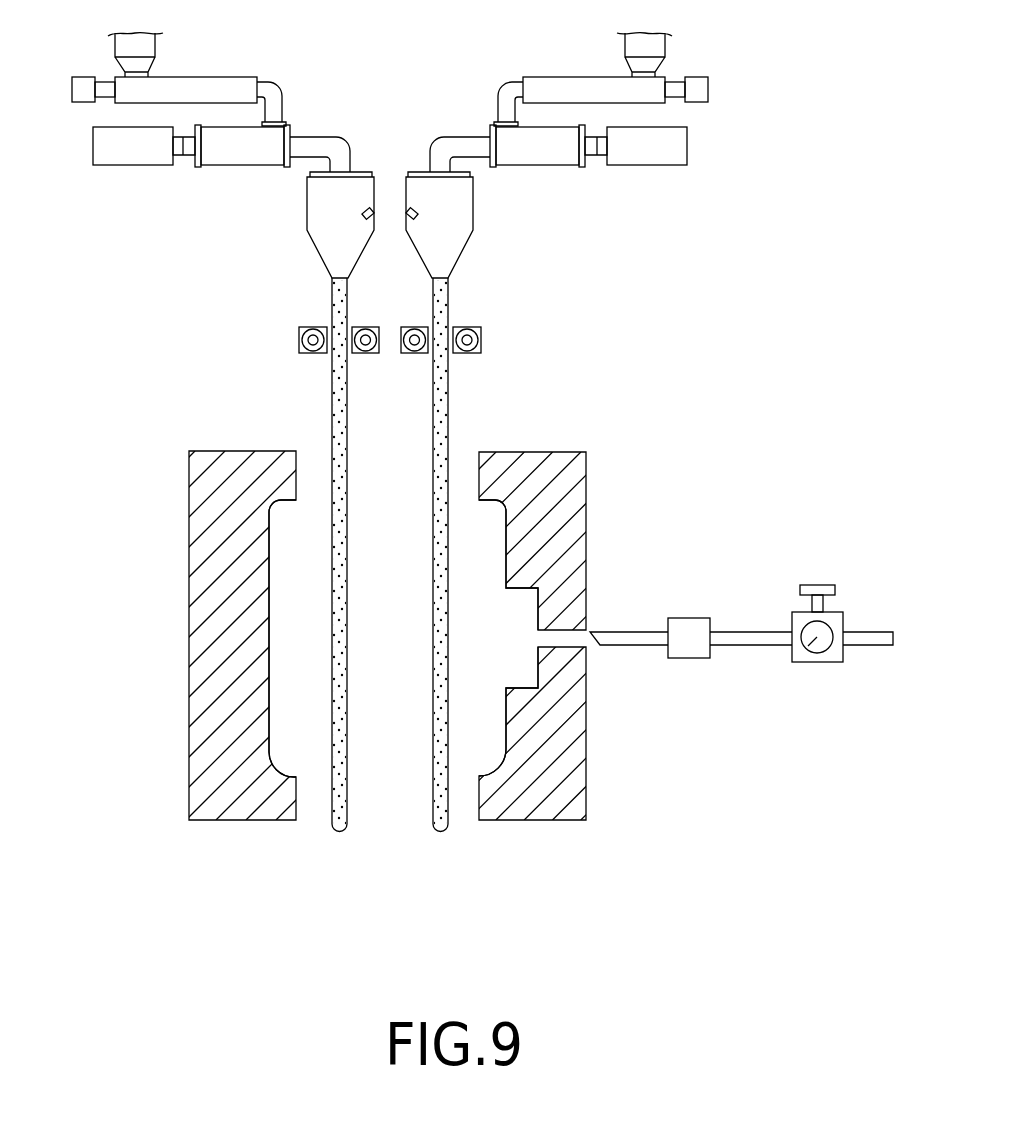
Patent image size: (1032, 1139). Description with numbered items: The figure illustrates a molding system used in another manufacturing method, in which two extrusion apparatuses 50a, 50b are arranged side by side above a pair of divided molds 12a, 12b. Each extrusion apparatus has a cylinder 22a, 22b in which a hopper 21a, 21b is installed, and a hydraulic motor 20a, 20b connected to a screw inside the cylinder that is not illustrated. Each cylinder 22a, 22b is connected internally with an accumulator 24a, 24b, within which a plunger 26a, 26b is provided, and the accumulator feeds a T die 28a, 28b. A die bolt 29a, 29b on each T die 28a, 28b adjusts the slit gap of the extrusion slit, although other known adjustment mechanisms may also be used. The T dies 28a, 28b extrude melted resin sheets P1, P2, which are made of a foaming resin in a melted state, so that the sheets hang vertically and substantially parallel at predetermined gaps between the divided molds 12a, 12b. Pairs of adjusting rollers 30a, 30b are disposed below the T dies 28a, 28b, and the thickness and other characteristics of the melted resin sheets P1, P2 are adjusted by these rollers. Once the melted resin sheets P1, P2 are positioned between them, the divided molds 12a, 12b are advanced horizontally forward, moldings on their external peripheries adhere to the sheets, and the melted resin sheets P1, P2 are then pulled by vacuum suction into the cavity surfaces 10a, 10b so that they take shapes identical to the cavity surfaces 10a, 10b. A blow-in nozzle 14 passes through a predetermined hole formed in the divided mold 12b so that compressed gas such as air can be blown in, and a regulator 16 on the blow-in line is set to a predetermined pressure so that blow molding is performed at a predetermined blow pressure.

The cavity surface 10a is at (296, 500).
The cavity surface 10b is at (483, 500).
The divided mold 12a is at (203, 578).
The divided mold 12b is at (567, 584).
The blow-in nozzle 14 is at (635, 645).
The regulator 16 is at (815, 663).
The hydraulic motor 20a is at (83, 69).
The hydraulic motor 20b is at (697, 69).
The hopper 21a is at (135, 39).
The hopper 21b is at (644, 39).
The cylinder 22a is at (190, 81).
The cylinder 22b is at (589, 81).
The accumulator 24a is at (221, 166).
The accumulator 24b is at (558, 166).
The plunger 26a is at (183, 167).
The plunger 26b is at (596, 167).
The T die 28a is at (321, 225).
The T die 28b is at (459, 225).
The die bolt 29a is at (366, 163).
The die bolt 29b is at (413, 163).
The adjusting rollers 30a is at (325, 320).
The adjusting rollers 30b is at (454, 320).
The extrusion apparatus 50a is at (284, 68).
The extrusion apparatus 50b is at (555, 177).
The melted resin sheet P1 is at (334, 580).
The melted resin sheet P2 is at (439, 580).